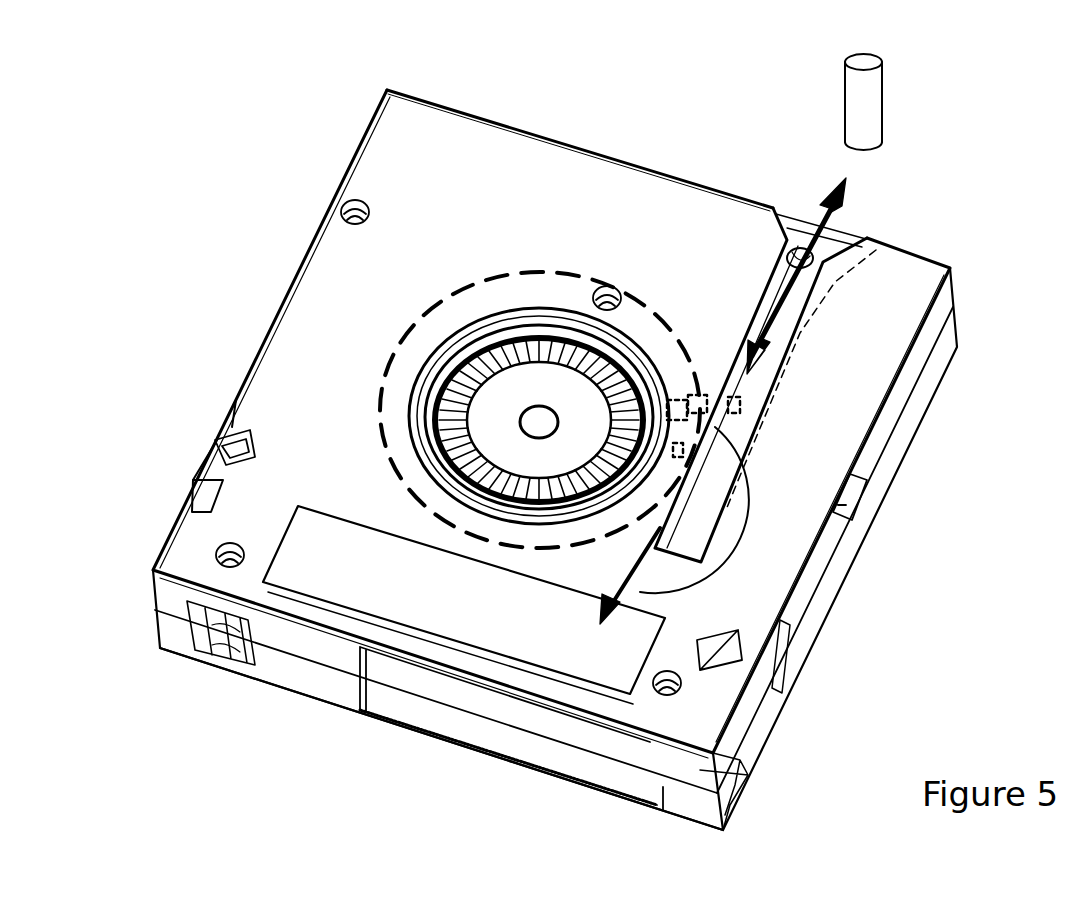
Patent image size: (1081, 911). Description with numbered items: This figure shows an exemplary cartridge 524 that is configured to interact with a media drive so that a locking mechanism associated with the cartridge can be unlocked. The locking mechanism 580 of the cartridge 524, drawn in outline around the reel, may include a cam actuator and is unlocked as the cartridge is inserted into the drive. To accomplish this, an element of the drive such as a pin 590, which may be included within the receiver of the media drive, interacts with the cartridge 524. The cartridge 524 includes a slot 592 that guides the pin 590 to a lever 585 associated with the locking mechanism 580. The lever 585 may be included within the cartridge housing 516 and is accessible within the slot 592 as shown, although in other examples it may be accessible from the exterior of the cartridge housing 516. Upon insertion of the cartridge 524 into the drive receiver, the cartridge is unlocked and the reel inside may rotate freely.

The cartridge 524 is at (299, 190).
The cartridge housing 516 is at (445, 167).
The locking mechanism 580 is at (385, 372).
The lever 585 is at (717, 415).
The pin 590 is at (873, 87).
The slot 592 is at (753, 440).